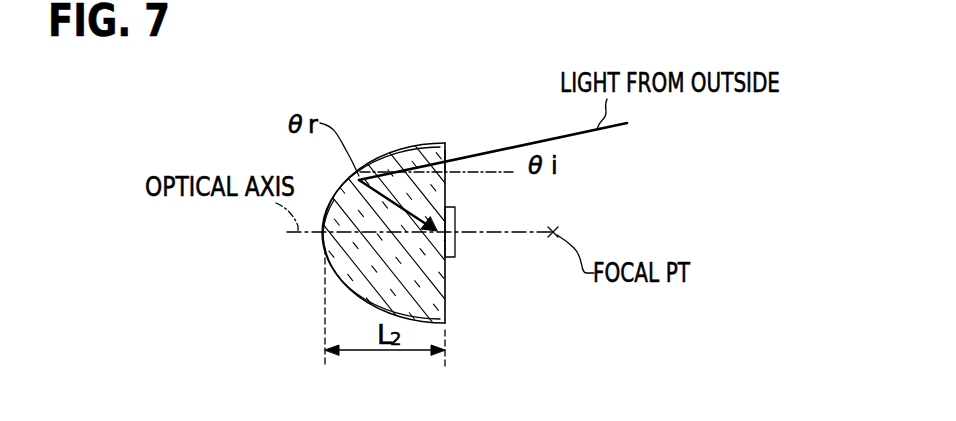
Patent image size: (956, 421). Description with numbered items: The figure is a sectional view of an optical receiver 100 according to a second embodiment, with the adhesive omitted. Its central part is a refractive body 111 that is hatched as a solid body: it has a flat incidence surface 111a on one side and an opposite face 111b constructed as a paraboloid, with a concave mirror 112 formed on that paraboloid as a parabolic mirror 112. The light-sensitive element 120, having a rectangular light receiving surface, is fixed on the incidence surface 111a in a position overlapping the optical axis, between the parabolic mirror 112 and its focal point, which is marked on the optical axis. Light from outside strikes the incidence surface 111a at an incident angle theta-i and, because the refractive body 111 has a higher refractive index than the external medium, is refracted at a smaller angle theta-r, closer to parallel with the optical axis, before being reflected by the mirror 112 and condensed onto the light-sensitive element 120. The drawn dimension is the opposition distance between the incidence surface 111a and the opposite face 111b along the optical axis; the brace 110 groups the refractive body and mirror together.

The optical receiver 100 is at (483, 99).
The lens 110 is at (463, 85).
The refractive body 111 is at (430, 146).
The incidence surface 111a is at (447, 160).
The opposite face 111b is at (328, 212).
The parabolic mirror 112 is at (381, 153).
The light-sensitive element 120 is at (456, 212).